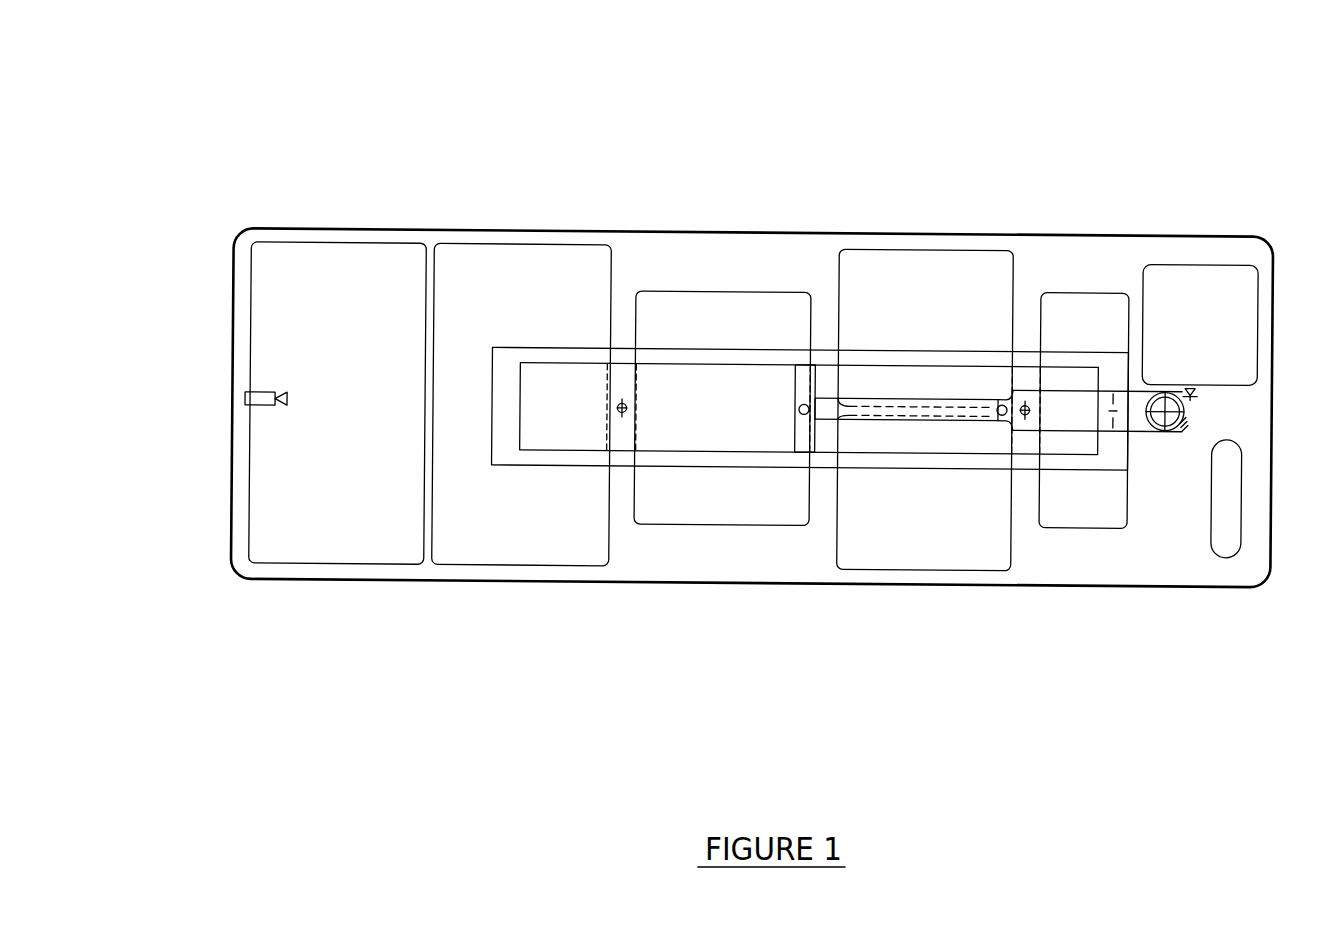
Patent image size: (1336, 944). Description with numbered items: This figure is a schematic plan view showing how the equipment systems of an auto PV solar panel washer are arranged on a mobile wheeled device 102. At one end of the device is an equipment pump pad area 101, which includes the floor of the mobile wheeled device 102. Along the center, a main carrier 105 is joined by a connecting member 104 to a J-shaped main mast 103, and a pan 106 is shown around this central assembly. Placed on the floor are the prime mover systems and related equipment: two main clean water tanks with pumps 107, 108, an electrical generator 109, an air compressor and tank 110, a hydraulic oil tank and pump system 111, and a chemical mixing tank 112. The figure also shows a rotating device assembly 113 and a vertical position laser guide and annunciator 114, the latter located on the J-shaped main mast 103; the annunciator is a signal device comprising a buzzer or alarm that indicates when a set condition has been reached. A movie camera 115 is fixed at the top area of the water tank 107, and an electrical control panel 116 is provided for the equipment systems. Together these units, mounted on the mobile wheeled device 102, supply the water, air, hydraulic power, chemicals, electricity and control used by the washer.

The equipment pump pad area 101 is at (1165, 218).
The mobile wheeled device 102 is at (752, 318).
The J-shaped main mast 103 is at (999, 240).
The connecting member 104 is at (721, 249).
The main carrier 105 is at (798, 250).
The pan 106 is at (742, 257).
The main clean water tank with pump 107 is at (314, 502).
The main clean water tank with pump 108 is at (487, 503).
The electrical generator 109 is at (679, 528).
The air compressor and tank 110 is at (833, 538).
The hydraulic oil tank and pump system 111 is at (883, 507).
The chemical mixing tank 112 is at (998, 530).
The rotating device assembly 113 is at (1078, 579).
The vertical position laser guide and annunciator 114 is at (1124, 578).
The movie camera 115 is at (235, 222).
The electrical control panel 116 is at (1181, 603).